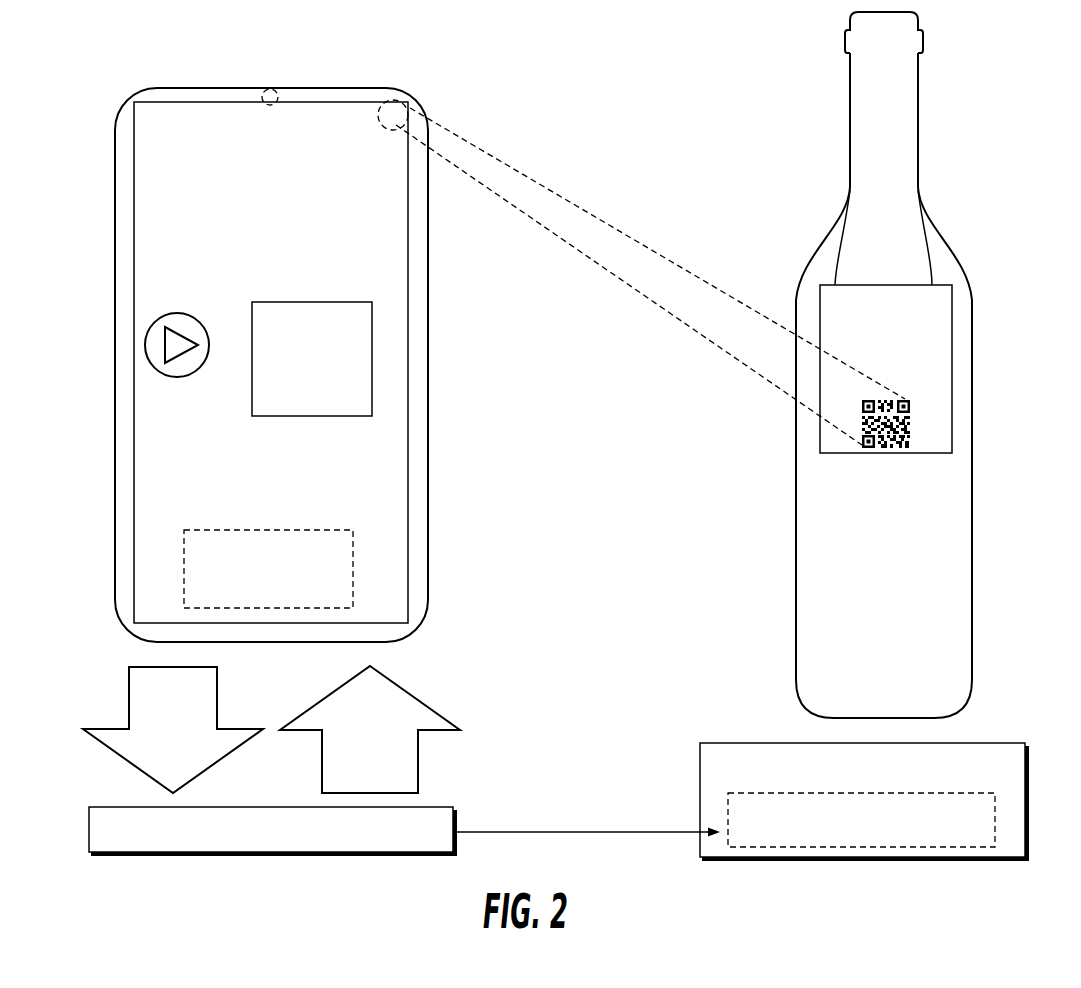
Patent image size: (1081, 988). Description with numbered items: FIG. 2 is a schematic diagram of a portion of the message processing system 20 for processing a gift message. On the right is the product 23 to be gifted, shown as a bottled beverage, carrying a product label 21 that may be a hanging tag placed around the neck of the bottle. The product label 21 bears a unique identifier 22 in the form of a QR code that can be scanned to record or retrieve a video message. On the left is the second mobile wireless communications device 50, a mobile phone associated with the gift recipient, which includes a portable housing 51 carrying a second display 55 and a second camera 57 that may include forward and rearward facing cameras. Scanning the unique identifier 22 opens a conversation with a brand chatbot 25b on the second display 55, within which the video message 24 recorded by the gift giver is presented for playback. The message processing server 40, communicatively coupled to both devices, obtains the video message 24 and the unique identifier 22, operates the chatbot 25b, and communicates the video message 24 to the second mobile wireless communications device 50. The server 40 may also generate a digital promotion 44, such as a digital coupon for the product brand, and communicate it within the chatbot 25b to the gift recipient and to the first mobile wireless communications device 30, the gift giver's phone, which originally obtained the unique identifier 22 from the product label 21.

The message processing system 20 is at (155, 45).
The second mobile wireless communications device 50 is at (334, 84).
The portable housing 51 is at (115, 240).
The second display 55 is at (147, 407).
The second camera 57 is at (263, 90).
The chatbot 25b is at (135, 128).
The video message 24 is at (357, 371).
The digital promotion 44 is at (353, 567).
The message processing server 40 is at (89, 830).
The first mobile wireless communications device 30 is at (1030, 770).
The product 23 is at (925, 110).
The product label 21 is at (952, 322).
The unique identifier 22 is at (910, 408).